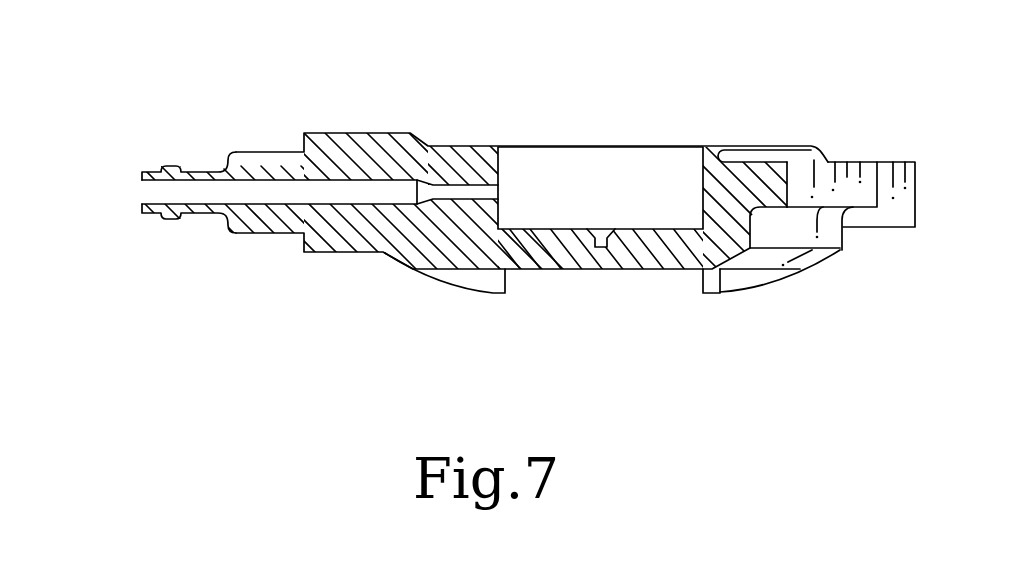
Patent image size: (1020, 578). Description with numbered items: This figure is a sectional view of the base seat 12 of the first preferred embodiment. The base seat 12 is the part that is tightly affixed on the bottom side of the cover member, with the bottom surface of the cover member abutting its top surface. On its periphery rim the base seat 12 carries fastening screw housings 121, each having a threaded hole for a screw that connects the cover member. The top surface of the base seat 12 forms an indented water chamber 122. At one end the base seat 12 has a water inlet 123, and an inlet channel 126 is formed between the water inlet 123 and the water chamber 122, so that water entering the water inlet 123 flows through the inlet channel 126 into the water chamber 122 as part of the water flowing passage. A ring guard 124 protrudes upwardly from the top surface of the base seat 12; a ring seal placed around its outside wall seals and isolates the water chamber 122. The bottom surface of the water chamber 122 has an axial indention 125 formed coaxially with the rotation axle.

The base seat 12 is at (845, 163).
The fastening screw housing 121 is at (880, 217).
The water chamber 122 is at (605, 167).
The water inlet 123 is at (142, 189).
The ring guard 124 is at (765, 153).
The axial indention 125 is at (602, 247).
The inlet channel 126 is at (368, 193).